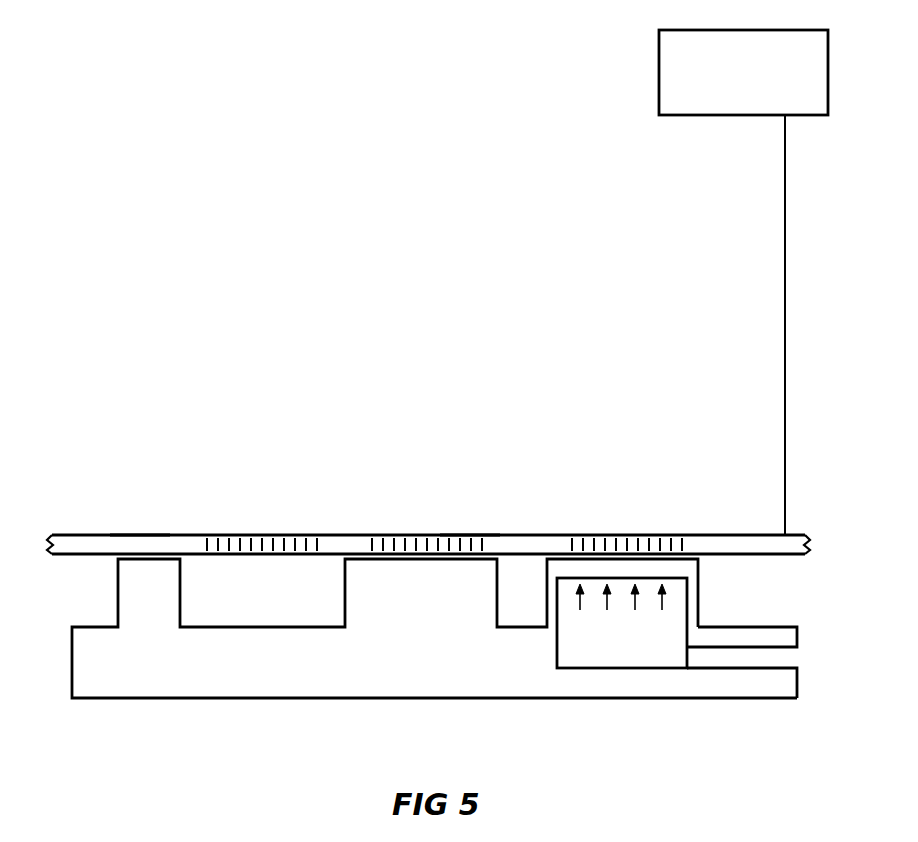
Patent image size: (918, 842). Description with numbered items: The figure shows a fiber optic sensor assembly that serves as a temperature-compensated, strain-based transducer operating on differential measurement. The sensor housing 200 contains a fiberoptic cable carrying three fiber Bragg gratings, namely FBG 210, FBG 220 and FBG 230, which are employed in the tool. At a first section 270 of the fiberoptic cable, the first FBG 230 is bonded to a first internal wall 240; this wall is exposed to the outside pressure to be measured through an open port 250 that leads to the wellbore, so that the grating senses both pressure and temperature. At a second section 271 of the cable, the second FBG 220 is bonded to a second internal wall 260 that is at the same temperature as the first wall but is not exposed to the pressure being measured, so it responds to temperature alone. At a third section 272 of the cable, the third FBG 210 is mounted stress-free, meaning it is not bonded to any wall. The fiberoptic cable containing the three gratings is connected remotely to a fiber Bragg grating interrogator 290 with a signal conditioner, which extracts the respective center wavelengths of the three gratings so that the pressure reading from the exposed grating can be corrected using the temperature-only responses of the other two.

The sensor housing 200 is at (158, 438).
The FBG 210 is at (227, 533).
The FBG 220 is at (407, 533).
The FBG 230 is at (607, 533).
The first internal wall 240 is at (663, 567).
The open port 250 is at (753, 655).
The second internal wall 260 is at (385, 566).
The first section 270 is at (658, 529).
The second section 271 is at (470, 532).
The third section 272 is at (143, 533).
The fiber Bragg grating interrogator 290 is at (743, 282).